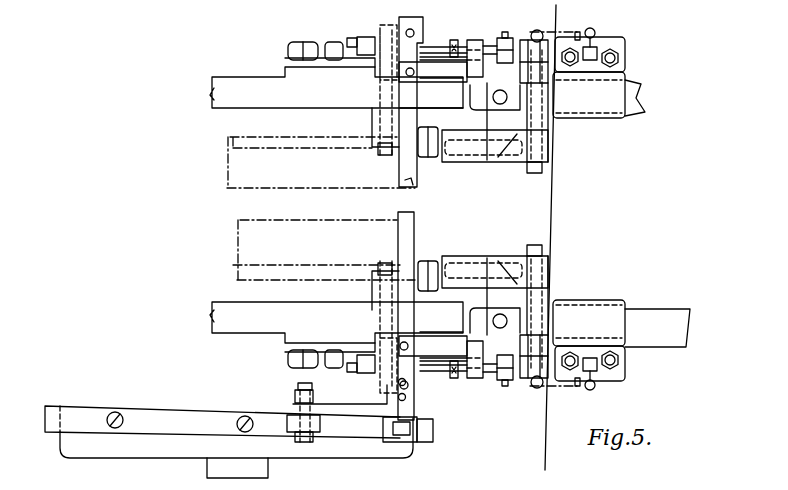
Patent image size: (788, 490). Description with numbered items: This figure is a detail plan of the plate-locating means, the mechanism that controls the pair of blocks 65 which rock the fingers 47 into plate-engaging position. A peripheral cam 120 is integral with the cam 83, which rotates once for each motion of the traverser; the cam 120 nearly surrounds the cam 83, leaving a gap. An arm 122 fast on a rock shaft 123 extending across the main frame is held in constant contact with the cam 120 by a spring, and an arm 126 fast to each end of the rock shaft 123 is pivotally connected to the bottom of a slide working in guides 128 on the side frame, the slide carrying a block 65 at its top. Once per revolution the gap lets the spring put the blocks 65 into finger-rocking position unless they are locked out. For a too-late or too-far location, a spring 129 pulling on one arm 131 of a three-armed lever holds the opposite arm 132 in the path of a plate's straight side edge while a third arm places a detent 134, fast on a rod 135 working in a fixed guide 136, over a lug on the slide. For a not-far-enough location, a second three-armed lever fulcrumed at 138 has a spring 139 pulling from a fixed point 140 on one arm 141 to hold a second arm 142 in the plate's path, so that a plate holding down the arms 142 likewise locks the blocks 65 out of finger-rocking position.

The fingers 47 is at (492, 297).
The pair of blocks 65 is at (527, 112).
The cam 83 is at (302, 458).
The peripheral cam 120 is at (222, 422).
The arm 122 is at (360, 416).
The rock shaft 123 is at (413, 184).
The arm 126 is at (442, 76).
The guides 128 is at (494, 209).
The spring 129 is at (350, 44).
The arm 131 is at (372, 45).
The arm 132 is at (422, 136).
The detent 134 is at (504, 33).
The rod 135 is at (442, 47).
The fixed guide 136 is at (475, 40).
The fulcrum 138 is at (535, 168).
The spring 139 is at (577, 32).
The fixed point 140 is at (596, 34).
The arm 141 is at (527, 45).
The arm 142 is at (482, 162).